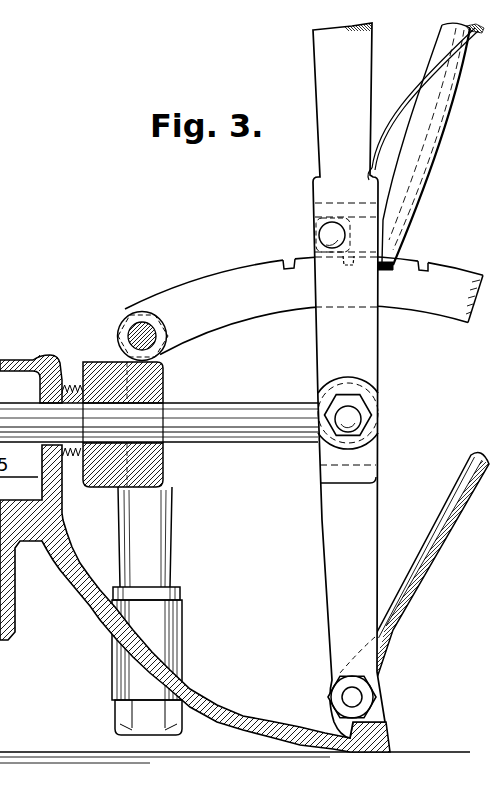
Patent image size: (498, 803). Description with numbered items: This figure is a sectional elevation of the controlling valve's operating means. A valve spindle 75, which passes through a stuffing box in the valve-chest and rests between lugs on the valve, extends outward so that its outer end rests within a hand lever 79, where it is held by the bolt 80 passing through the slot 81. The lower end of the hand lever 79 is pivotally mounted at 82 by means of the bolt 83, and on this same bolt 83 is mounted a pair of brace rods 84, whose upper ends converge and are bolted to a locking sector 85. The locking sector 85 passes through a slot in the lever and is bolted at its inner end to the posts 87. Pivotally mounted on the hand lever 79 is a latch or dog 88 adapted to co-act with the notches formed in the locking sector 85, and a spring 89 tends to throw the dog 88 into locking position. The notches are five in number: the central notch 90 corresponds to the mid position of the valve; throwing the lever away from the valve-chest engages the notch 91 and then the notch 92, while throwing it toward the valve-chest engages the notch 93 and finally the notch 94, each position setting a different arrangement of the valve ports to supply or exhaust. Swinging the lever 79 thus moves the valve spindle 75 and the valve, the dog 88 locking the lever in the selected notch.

The valve spindle 75 is at (230, 431).
The hand lever 79 is at (362, 332).
The bolt 80 is at (375, 428).
The slot 81 is at (365, 406).
The pivot 82 is at (325, 700).
The bolt 83 is at (357, 694).
The brace rods 84 is at (432, 573).
The locking sector 85 is at (280, 305).
The posts 87 is at (153, 537).
The latch or dog 88 is at (388, 233).
The spring 89 is at (396, 93).
The central notch 90 is at (386, 272).
The notch 91 is at (424, 272).
The notch 92 is at (480, 283).
The notch 93 is at (349, 268).
The notch 94 is at (283, 260).